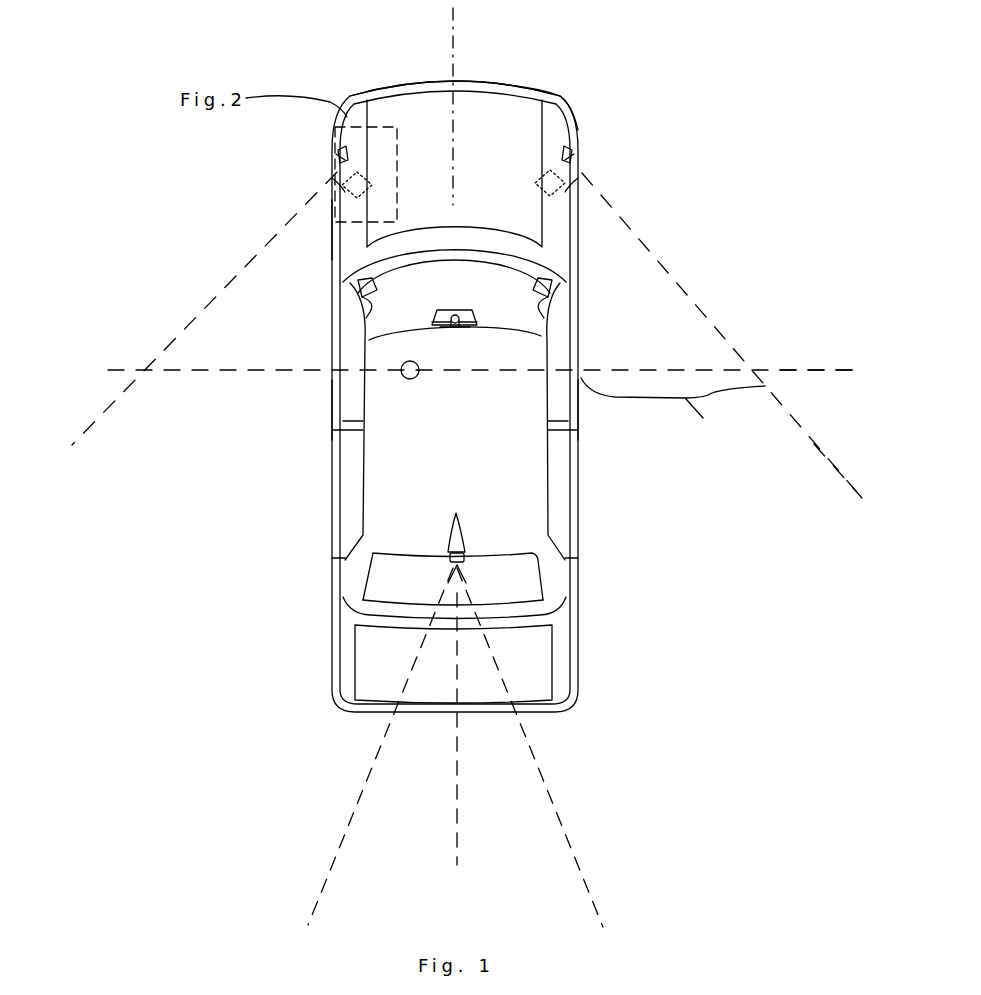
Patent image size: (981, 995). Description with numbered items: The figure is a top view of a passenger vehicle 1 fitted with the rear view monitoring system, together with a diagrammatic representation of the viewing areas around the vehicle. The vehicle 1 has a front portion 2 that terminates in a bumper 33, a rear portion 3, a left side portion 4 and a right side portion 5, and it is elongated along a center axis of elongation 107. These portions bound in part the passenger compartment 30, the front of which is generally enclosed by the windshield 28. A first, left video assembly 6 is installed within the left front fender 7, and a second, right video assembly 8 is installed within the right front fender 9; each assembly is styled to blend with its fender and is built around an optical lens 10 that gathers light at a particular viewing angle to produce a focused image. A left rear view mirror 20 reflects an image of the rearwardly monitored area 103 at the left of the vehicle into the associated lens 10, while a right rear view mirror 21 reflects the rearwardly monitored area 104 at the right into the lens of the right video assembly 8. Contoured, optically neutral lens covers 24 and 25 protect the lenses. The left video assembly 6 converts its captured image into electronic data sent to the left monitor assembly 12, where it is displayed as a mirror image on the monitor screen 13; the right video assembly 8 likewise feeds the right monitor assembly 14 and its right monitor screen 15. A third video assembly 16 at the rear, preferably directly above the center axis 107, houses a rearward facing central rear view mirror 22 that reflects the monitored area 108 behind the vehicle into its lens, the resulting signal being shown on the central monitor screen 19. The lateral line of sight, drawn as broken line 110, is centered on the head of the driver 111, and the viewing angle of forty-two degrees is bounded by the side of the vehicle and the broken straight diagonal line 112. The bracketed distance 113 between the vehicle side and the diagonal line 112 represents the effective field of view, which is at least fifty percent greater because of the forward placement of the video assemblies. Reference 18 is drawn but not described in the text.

The passenger vehicle 1 is at (612, 465).
The front portion 2 is at (490, 75).
The rear portion 3 is at (315, 65).
The left side portion 4 is at (332, 408).
The right side portion 5 is at (580, 412).
The left video assembly 6 is at (338, 152).
The left front fender 7 is at (328, 215).
The right video assembly 8 is at (573, 156).
The right front fender 9 is at (580, 199).
The optical lens 10 is at (337, 173).
The left monitor assembly 12 is at (360, 285).
The monitor screen 13 is at (360, 308).
The right monitor assembly 14 is at (552, 284).
The right monitor screen 15 is at (477, 317).
The third video assembly 16 is at (456, 544).
The sensor housing 18 is at (548, 328).
The central monitor screen 19 is at (467, 328).
The left rear view mirror 20 is at (336, 157).
The right rear view mirror 21 is at (578, 159).
The central rear view mirror 22 is at (462, 560).
The lens cover 24 is at (333, 184).
The lens cover 25 is at (580, 213).
The windshield 28 is at (443, 289).
The passenger compartment 30 is at (443, 447).
The bumper 33 is at (538, 88).
The rearwardly monitored area 103 is at (200, 461).
The rearwardly monitored area 104 is at (725, 503).
The center axis of elongation 107 is at (457, 753).
The monitored area 108 is at (375, 816).
The lateral line of sight 110 is at (797, 372).
The driver 111 is at (412, 379).
The broken straight diagonal line 112 is at (822, 443).
The distance 113 is at (673, 410).